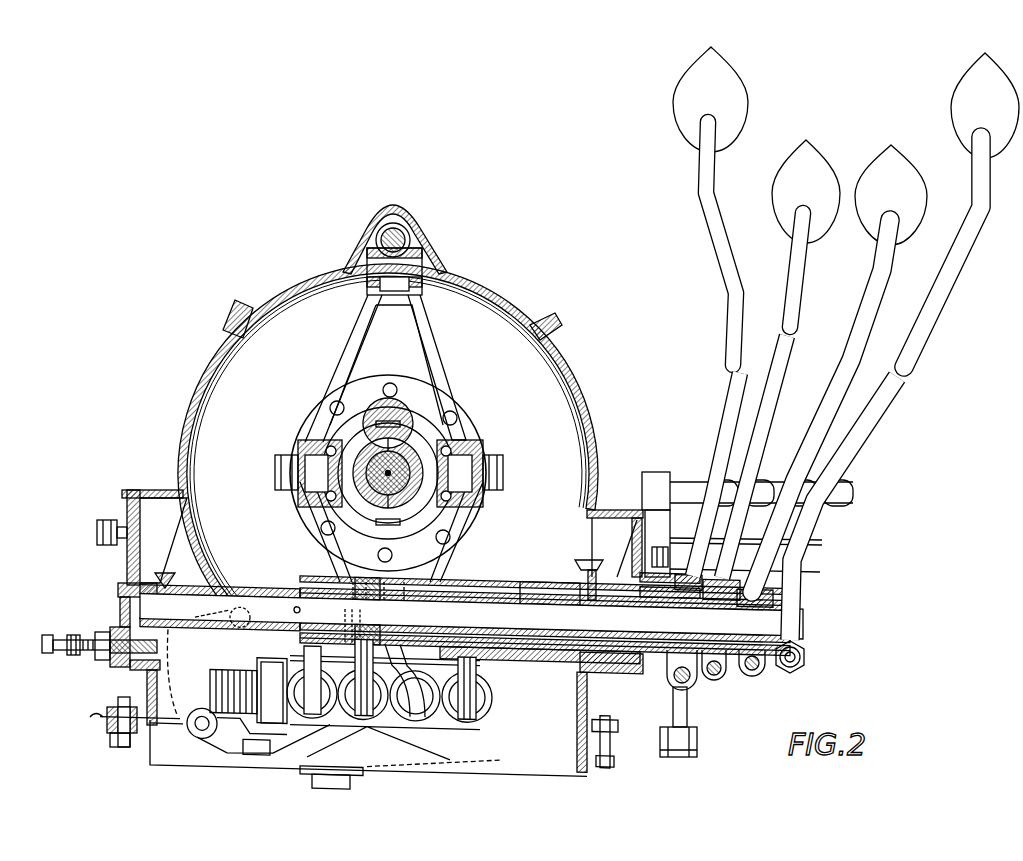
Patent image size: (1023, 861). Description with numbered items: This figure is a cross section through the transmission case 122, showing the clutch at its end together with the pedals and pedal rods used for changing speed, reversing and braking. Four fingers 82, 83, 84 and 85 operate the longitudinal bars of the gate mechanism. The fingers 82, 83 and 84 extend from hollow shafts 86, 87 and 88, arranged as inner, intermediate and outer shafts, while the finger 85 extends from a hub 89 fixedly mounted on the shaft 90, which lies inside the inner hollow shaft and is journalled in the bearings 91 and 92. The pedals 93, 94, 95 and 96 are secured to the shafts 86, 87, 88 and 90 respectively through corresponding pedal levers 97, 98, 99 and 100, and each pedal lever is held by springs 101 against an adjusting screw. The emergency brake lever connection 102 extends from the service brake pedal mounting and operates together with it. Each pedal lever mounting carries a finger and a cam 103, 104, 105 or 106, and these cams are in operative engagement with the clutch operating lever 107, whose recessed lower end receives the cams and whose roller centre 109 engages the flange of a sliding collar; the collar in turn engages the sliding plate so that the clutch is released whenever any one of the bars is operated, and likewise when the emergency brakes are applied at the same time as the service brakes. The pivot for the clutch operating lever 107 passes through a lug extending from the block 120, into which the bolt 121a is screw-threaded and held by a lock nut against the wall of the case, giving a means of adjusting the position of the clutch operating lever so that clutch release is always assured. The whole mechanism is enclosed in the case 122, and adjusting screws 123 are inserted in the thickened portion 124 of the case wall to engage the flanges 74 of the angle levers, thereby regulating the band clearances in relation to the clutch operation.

The flanges 74 is at (175, 652).
The finger 82 is at (462, 706).
The finger 83 is at (415, 706).
The finger 84 is at (365, 706).
The finger 85 is at (308, 705).
The hollow shaft 86 is at (512, 628).
The hollow shaft 87 is at (510, 570).
The hollow shaft 88 is at (472, 570).
The hub 89 is at (320, 585).
The shaft 90 is at (268, 589).
The bearing 91 is at (556, 556).
The bearing 92 is at (127, 575).
The pedal 93 is at (673, 104).
The pedal 94 is at (773, 186).
The pedal 95 is at (862, 222).
The pedal 96 is at (952, 125).
The pedal lever 97 is at (725, 314).
The pedal lever 98 is at (778, 344).
The pedal lever 99 is at (843, 353).
The pedal lever 100 is at (896, 400).
The springs 101 is at (846, 511).
The emergency brake lever connection 102 is at (687, 724).
The cam 103 is at (405, 580).
The cam 104 is at (385, 580).
The cam 105 is at (366, 580).
The cam 106 is at (353, 580).
The clutch operating lever 107 is at (455, 547).
The roller centre 109 is at (462, 442).
The block 120 is at (364, 240).
The bolt 121a is at (415, 233).
The case 122 is at (464, 282).
The adjusting screws 123 is at (97, 640).
The thickened portion 124 is at (115, 670).